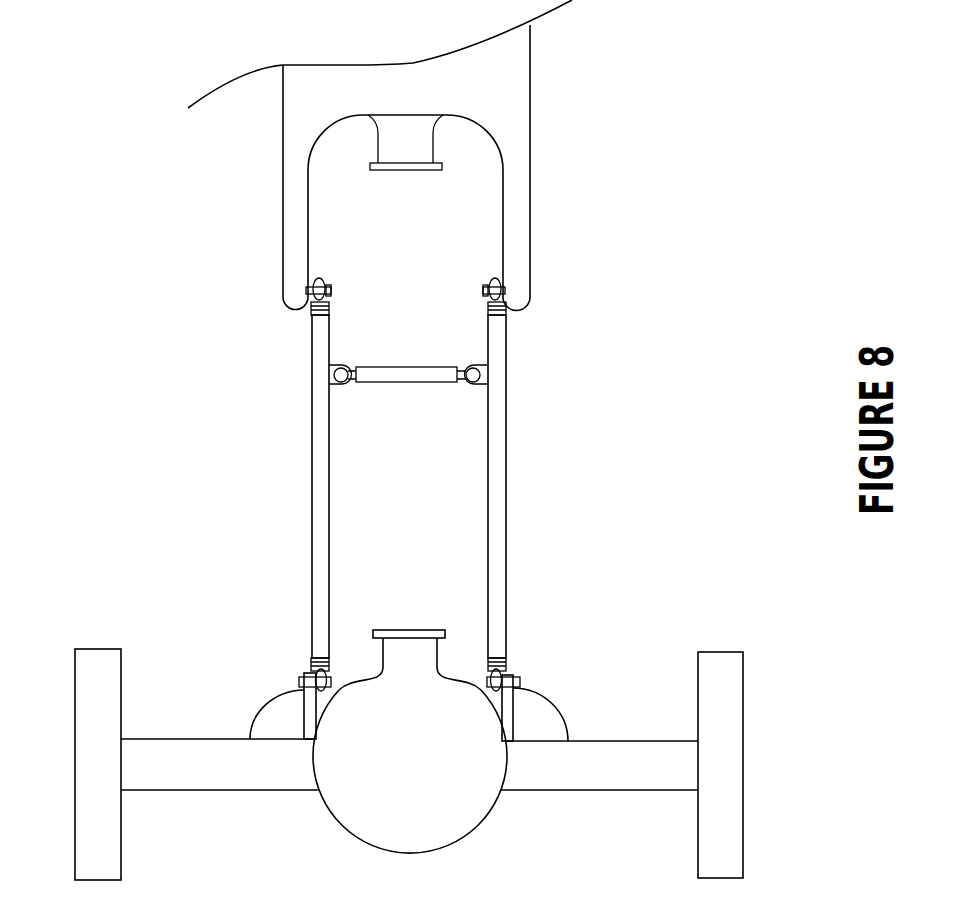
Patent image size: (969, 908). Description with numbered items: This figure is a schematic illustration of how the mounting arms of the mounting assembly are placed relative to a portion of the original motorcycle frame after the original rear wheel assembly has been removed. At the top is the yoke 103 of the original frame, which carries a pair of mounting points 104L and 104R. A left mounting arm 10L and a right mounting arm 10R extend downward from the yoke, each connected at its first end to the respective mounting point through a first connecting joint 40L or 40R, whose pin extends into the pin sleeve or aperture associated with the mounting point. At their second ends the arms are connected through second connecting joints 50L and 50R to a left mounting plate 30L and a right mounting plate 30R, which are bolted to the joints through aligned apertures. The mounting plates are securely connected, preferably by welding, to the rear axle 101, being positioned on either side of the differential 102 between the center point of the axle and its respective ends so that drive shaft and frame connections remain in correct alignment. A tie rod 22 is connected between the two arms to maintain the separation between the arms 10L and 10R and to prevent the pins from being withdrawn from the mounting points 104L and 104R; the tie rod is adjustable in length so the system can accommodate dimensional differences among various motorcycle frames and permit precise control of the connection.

The left mounting arm 10L is at (307, 545).
The right mounting arm 10R is at (508, 525).
The tie rod 22 is at (408, 382).
The left mounting plate 30L is at (267, 702).
The right mounting plate 30R is at (552, 702).
The left first connecting joint 40L is at (327, 287).
The right first connecting joint 40R is at (489, 287).
The left second connecting joint 50L is at (328, 671).
The right second connecting joint 50R is at (492, 672).
The rear axle 101 is at (243, 767).
The differential 102 is at (445, 802).
The yoke 103 is at (478, 72).
The left mounting point 104L is at (510, 290).
The right mounting point 104R is at (310, 292).